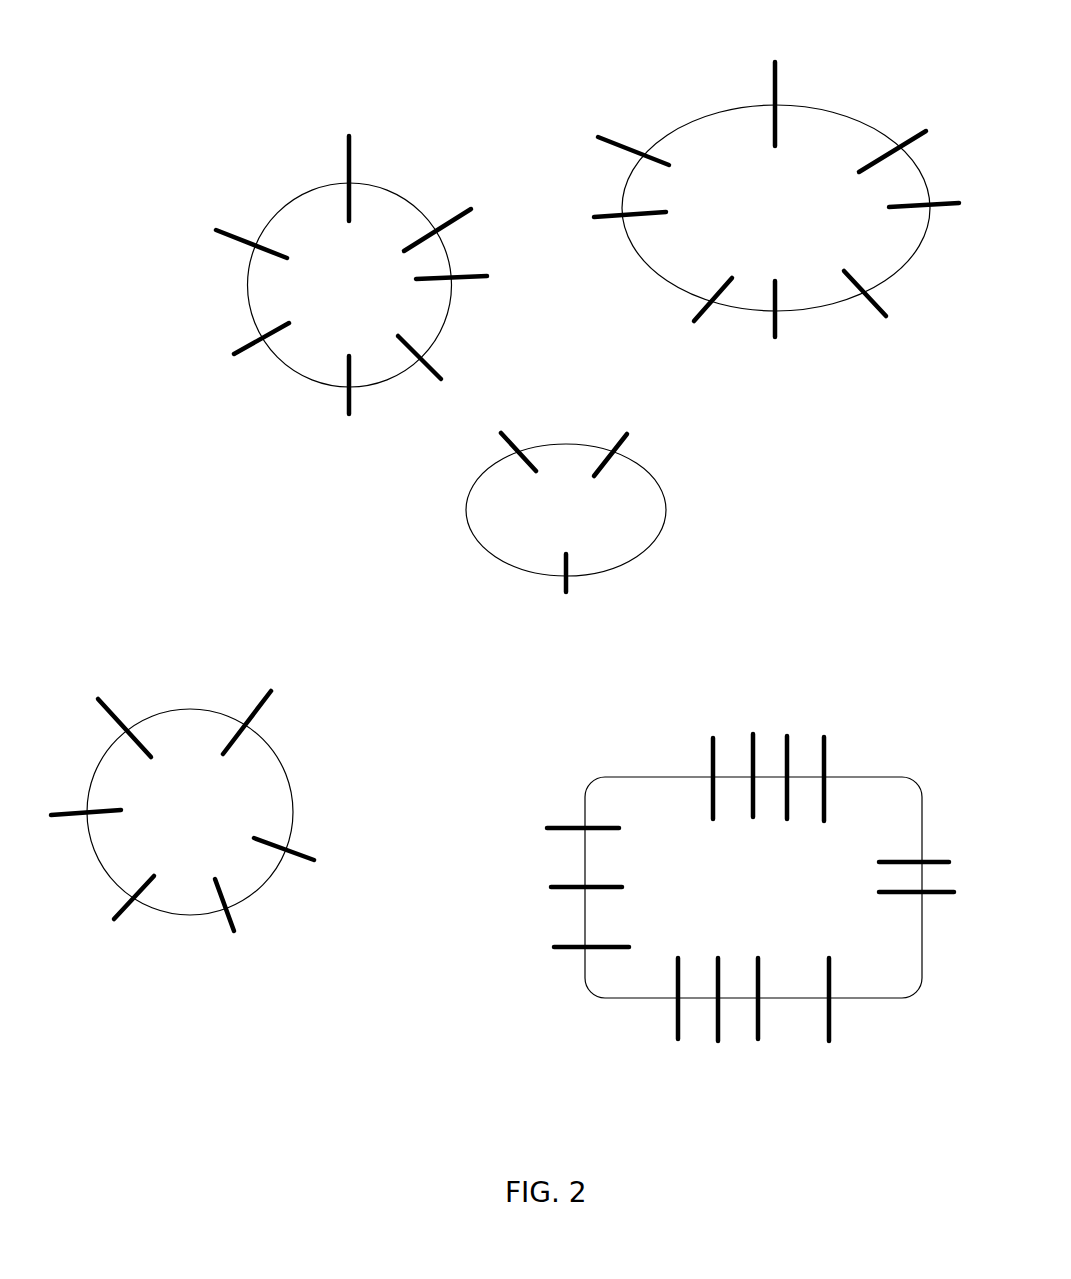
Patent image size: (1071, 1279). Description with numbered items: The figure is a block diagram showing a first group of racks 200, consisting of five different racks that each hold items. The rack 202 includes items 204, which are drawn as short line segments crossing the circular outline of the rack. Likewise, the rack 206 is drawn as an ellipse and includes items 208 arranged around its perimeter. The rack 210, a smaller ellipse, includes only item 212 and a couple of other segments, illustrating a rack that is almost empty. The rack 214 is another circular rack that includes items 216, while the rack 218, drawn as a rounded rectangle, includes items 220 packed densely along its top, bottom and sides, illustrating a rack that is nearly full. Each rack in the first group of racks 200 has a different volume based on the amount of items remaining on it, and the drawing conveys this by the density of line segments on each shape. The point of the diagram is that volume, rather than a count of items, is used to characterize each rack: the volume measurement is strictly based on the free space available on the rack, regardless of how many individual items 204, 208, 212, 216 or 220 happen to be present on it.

The first group of racks 200 is at (243, 86).
The rack 202 is at (283, 207).
The items 204 is at (235, 235).
The rack 206 is at (708, 132).
The items 208 is at (613, 140).
The rack 210 is at (467, 508).
The item 212 is at (562, 577).
The rack 214 is at (158, 713).
The items 216 is at (257, 708).
The rack 218 is at (690, 777).
The items 220 is at (573, 827).